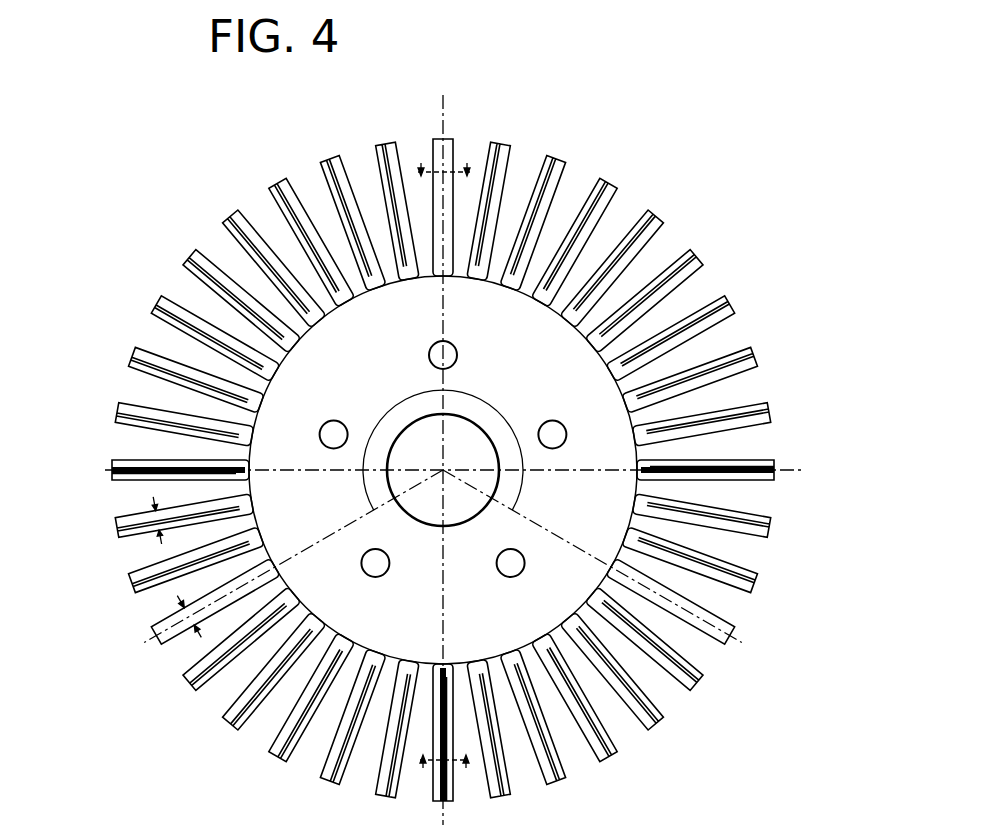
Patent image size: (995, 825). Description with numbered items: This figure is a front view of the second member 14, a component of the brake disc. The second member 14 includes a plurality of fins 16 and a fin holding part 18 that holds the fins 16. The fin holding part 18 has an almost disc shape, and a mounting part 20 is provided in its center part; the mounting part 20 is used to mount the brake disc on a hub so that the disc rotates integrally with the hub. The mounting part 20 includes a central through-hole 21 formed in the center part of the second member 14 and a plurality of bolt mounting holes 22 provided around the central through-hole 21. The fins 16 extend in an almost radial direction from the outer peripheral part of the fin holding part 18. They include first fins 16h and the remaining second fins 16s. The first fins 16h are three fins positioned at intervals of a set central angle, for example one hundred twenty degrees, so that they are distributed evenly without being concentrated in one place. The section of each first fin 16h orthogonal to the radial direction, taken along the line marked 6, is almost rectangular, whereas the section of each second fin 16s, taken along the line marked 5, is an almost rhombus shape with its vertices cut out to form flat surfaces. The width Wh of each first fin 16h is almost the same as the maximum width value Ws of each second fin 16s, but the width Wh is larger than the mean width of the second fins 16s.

The second member 14 is at (783, 267).
The fins 16 is at (273, 183).
The second fins 16s is at (610, 187).
The first fins 16h is at (449, 138).
The fin holding part 18 is at (523, 610).
The mounting part 20 is at (338, 368).
The central through-hole 21 is at (480, 513).
The bolt mounting holes 22 is at (331, 428).
The maximum width value of the second fin Ws is at (117, 543).
The width of the first fin Wh is at (169, 637).
The section line 5- 5 is at (444, 780).
The section line 6- 6 is at (443, 157).